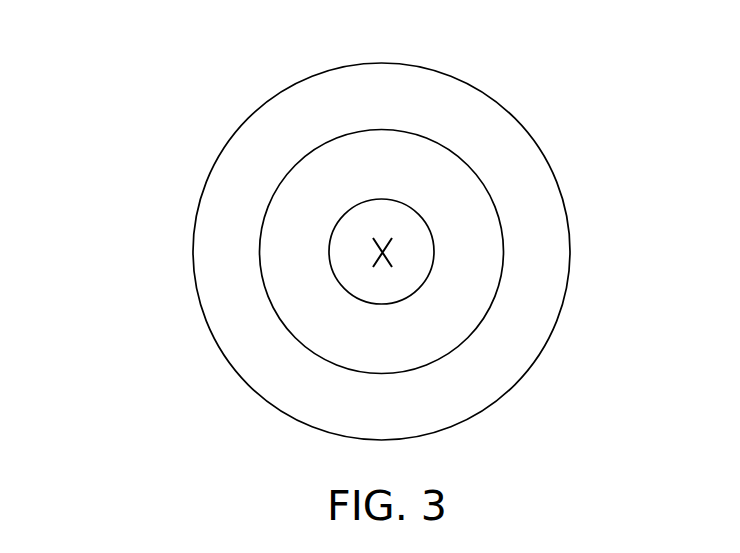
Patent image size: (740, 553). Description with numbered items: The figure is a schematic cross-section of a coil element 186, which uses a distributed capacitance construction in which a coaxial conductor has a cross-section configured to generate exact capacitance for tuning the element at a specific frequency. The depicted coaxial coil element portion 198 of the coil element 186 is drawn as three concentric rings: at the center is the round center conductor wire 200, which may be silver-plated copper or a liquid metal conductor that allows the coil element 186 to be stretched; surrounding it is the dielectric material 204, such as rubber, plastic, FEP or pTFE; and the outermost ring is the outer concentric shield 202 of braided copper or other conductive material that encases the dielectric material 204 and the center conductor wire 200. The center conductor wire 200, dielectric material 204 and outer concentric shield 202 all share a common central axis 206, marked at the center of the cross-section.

The coil element 186 is at (256, 66).
The coaxial coil element portion 198 is at (159, 194).
The center conductor wire 200 is at (415, 248).
The outer concentric shield 202 is at (525, 347).
The dielectric material 204 is at (467, 290).
The common central axis 206 is at (385, 246).